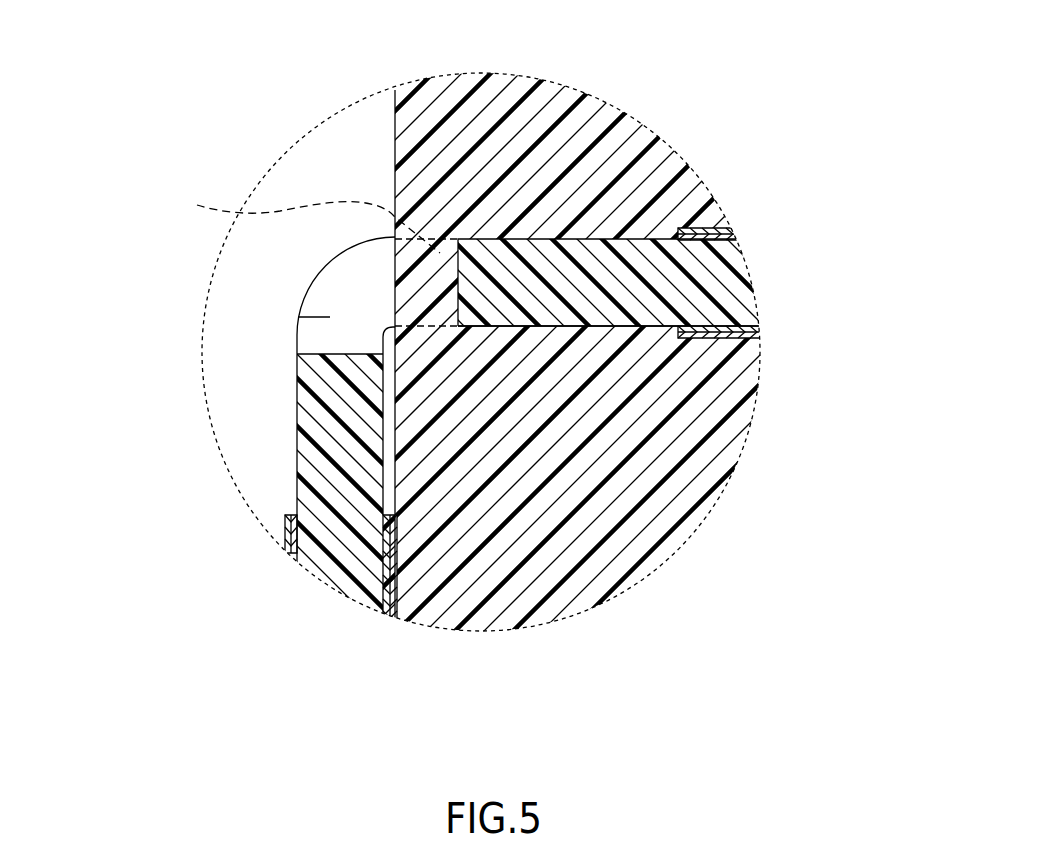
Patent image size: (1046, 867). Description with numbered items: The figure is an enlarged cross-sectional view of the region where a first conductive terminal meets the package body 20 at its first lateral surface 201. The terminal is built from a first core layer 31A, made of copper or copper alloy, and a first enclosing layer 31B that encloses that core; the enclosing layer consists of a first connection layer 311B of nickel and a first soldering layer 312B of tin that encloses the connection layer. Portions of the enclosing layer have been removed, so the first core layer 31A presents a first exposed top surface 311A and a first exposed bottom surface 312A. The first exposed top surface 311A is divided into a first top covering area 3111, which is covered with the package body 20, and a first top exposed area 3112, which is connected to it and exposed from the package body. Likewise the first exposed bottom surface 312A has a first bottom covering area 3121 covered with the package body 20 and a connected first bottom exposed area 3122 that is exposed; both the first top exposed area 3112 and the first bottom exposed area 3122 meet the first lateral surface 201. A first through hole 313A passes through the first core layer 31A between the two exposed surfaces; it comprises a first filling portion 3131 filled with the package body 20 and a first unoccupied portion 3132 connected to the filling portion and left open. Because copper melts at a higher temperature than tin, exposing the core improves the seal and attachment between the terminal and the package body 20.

The package body 20 is at (508, 103).
The first lateral surface 201 is at (395, 123).
The first core layer 31A is at (469, 380).
The first exposed top surface 311A is at (469, 334).
The first top covering area 3111 is at (638, 239).
The first top exposed area 3112 is at (297, 410).
The first exposed bottom surface 312A is at (580, 529).
The first bottom covering area 3121 is at (625, 327).
The first bottom exposed area 3122 is at (390, 478).
The first enclosing layer 31B is at (586, 455).
The first connection layer 311B is at (720, 241).
The first soldering layer 312B is at (713, 229).
The first through hole 313A is at (251, 263).
The first filling portion 3131 is at (289, 222).
The first unoccupied portion 3132 is at (300, 317).